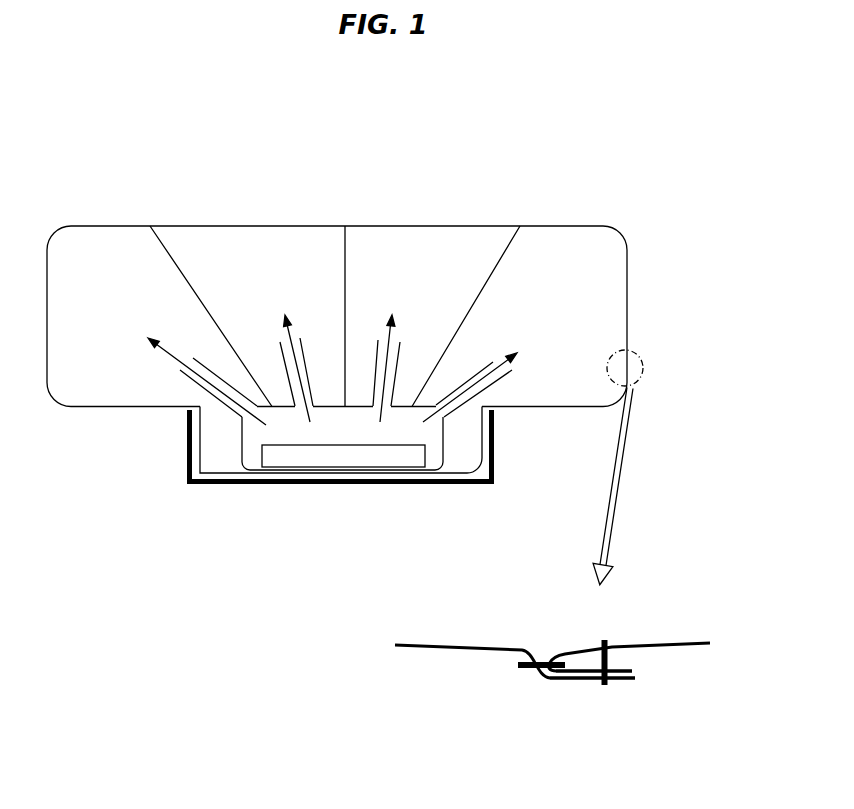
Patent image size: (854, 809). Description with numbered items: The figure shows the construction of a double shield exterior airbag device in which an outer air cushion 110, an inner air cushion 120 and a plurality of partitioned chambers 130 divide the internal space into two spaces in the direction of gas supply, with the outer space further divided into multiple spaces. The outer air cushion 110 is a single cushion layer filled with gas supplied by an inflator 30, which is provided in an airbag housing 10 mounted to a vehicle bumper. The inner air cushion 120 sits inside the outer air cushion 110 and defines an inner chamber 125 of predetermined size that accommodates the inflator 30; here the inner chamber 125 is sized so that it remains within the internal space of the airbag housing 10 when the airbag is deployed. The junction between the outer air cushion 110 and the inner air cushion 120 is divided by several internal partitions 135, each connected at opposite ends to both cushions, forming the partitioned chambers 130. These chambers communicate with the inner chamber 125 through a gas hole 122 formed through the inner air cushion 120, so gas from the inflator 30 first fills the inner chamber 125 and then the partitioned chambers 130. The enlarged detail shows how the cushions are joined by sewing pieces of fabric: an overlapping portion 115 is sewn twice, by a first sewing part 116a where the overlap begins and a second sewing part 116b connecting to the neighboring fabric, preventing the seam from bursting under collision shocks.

The airbag housing 10 is at (444, 484).
The inflator 30 is at (332, 452).
The outer air cushion 110 is at (65, 408).
The overlapping portion 115 is at (563, 683).
The first sewing part 116a is at (518, 665).
The second sewing part 116b is at (612, 657).
The inner air cushion 120 is at (246, 470).
The gas hole 122 is at (470, 406).
The inner chamber 125 is at (433, 429).
The partitioned chambers 130 is at (116, 248).
The internal partitions 135 is at (173, 248).